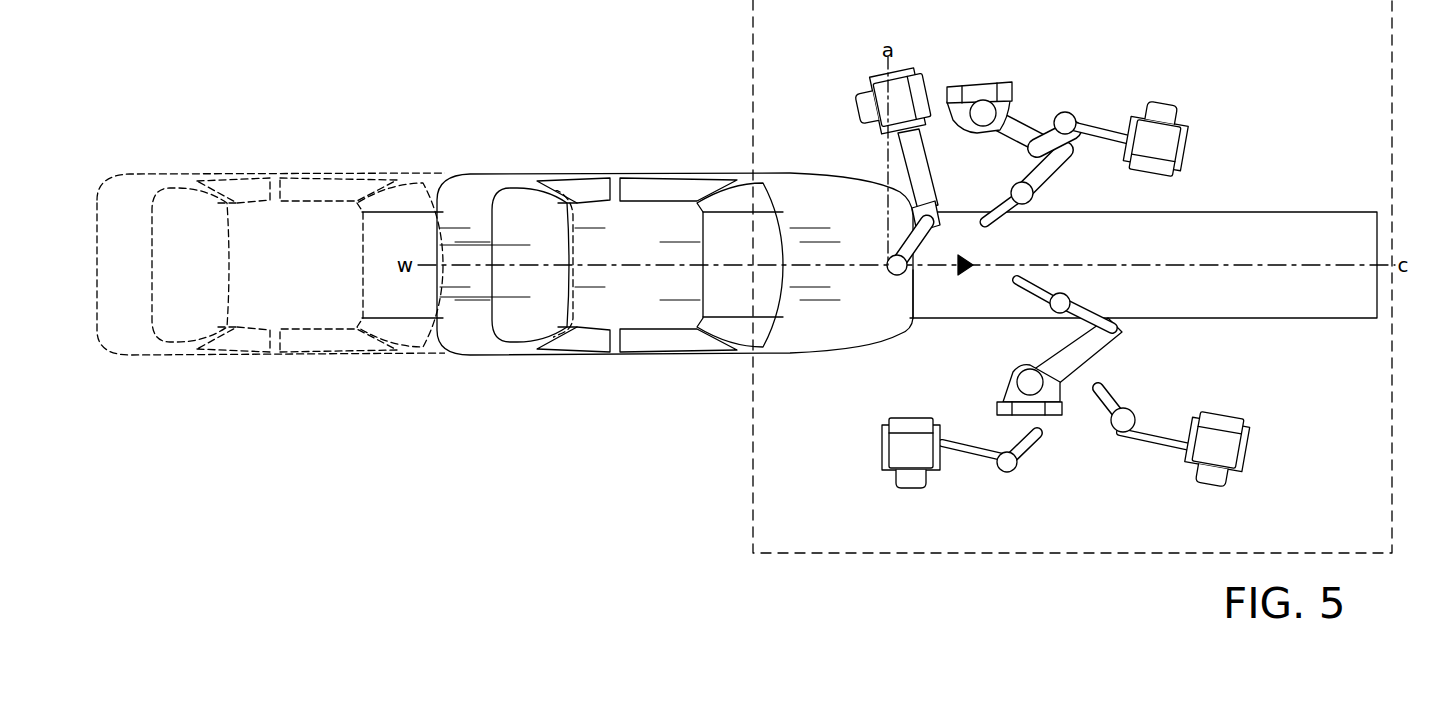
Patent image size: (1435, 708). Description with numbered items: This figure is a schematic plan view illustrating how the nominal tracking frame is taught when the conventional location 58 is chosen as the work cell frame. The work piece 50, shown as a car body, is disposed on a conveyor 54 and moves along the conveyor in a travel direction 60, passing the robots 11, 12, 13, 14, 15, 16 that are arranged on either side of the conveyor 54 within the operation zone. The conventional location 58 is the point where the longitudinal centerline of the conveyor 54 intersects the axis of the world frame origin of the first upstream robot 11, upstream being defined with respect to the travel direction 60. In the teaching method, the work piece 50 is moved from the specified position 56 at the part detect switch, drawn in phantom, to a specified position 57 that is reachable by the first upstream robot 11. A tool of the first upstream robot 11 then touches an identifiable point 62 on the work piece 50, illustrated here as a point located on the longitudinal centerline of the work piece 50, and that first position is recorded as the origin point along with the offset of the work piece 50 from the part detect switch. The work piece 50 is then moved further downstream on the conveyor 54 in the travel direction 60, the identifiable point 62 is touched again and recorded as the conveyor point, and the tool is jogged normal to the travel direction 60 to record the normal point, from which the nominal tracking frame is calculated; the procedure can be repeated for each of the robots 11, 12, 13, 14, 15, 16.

The first upstream robot 11 is at (855, 97).
The robot 12 is at (880, 477).
The robot 13 is at (1013, 78).
The robot 14 is at (1053, 417).
The robot 15 is at (1183, 102).
The robot 16 is at (1233, 480).
The work piece 50 is at (505, 271).
The conveyor 54 is at (1298, 210).
The specified position 56 is at (278, 172).
The specified position 57 is at (612, 173).
The conventional location 58 is at (895, 275).
The travel direction 60 is at (945, 267).
The identifiable point 62 is at (910, 270).